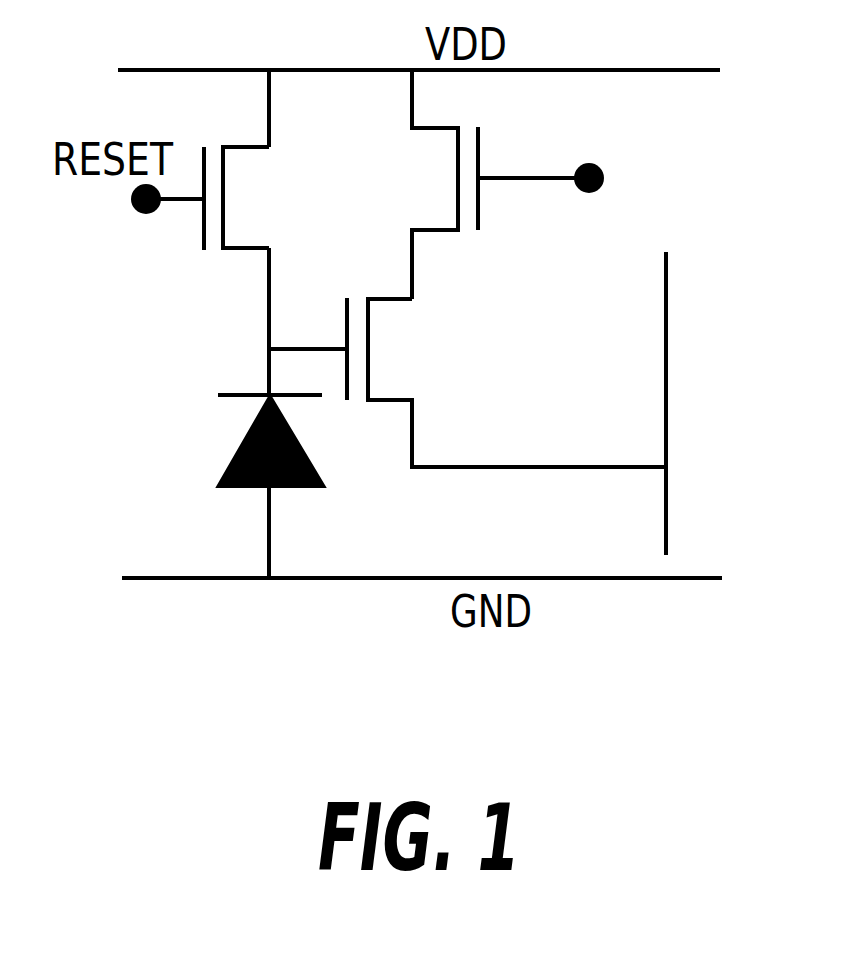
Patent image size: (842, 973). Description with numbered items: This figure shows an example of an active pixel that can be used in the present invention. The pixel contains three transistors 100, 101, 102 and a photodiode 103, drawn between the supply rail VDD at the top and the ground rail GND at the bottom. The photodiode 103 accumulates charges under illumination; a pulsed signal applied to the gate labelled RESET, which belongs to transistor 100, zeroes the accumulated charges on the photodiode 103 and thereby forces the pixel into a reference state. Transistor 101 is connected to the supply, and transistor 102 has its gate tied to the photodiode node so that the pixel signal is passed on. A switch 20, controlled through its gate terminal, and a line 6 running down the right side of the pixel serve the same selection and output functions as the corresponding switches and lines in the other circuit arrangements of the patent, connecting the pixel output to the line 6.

The line 6 is at (666, 365).
The switch 20 is at (528, 180).
The transistor 100 is at (270, 200).
The transistor 101 is at (587, 70).
The transistor 102 is at (403, 347).
The photodiode 103 is at (235, 455).